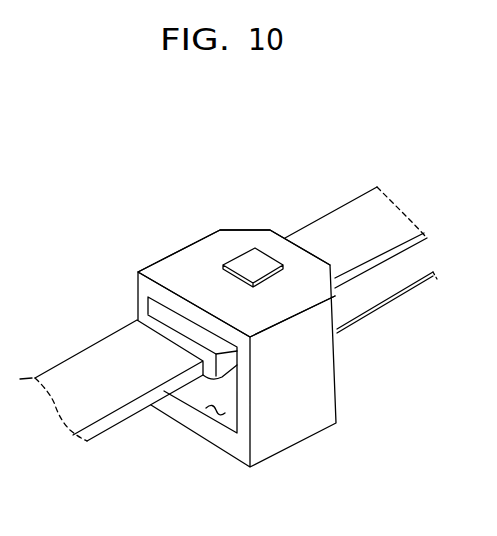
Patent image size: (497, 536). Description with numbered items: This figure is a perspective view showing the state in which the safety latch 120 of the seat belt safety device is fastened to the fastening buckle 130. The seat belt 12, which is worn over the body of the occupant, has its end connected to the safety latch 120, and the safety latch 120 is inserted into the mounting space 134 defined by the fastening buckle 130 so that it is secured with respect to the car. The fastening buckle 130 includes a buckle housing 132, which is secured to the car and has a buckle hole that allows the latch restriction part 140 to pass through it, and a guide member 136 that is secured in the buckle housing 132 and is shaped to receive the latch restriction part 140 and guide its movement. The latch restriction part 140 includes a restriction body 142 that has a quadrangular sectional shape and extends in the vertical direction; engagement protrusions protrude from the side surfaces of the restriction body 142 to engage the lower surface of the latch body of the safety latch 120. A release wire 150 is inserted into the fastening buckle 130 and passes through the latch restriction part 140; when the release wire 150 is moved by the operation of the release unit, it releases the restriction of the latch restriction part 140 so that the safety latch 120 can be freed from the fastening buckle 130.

The seat belt 12 is at (103, 360).
The safety latch 120 is at (173, 317).
The fastening buckle 130 is at (236, 327).
The buckle housing 132 is at (213, 247).
The mounting space 134 is at (208, 412).
The guide member 136 is at (208, 407).
The latch restriction part 140 is at (250, 224).
The restriction body 142 is at (262, 258).
The release wire 150 is at (387, 303).